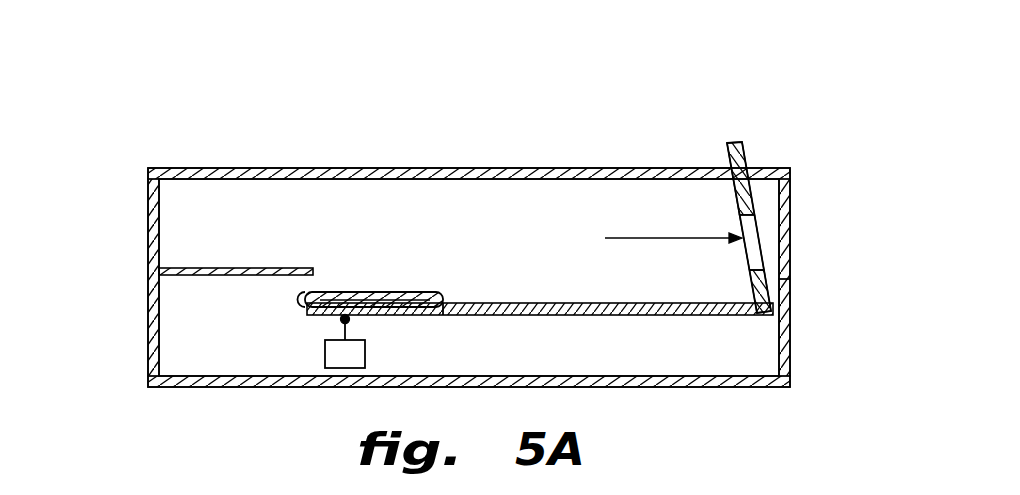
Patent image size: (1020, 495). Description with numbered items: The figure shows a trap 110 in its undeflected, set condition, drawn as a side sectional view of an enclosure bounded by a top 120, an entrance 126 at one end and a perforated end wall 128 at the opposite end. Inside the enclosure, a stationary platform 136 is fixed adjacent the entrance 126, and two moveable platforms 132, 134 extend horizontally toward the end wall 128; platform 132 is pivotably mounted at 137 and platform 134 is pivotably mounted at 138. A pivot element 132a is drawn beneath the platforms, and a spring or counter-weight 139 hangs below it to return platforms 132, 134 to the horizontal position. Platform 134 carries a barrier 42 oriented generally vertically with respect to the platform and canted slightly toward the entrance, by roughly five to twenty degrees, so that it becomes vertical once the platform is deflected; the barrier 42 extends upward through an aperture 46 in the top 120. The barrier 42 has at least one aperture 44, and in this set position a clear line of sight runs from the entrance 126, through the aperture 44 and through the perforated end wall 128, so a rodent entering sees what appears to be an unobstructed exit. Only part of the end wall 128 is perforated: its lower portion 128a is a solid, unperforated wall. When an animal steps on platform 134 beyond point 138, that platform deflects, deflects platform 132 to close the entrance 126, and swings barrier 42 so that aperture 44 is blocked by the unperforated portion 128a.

The trap 110 is at (162, 128).
The top 120 is at (397, 170).
The entrance 126 is at (148, 243).
The perforated end wall 128 is at (790, 245).
The lower portion of end wall 128a is at (790, 338).
The moveable platform 132 is at (345, 293).
The pivot 132a is at (395, 315).
The moveable platform 134 is at (545, 303).
The stationary platform 136 is at (218, 268).
The pivot mounting 137 is at (300, 303).
The pivot point 138 is at (450, 302).
The spring or counter-weight 139 is at (325, 355).
The barrier 42 is at (740, 170).
The aperture 44 is at (748, 252).
The aperture in top 46 is at (740, 178).